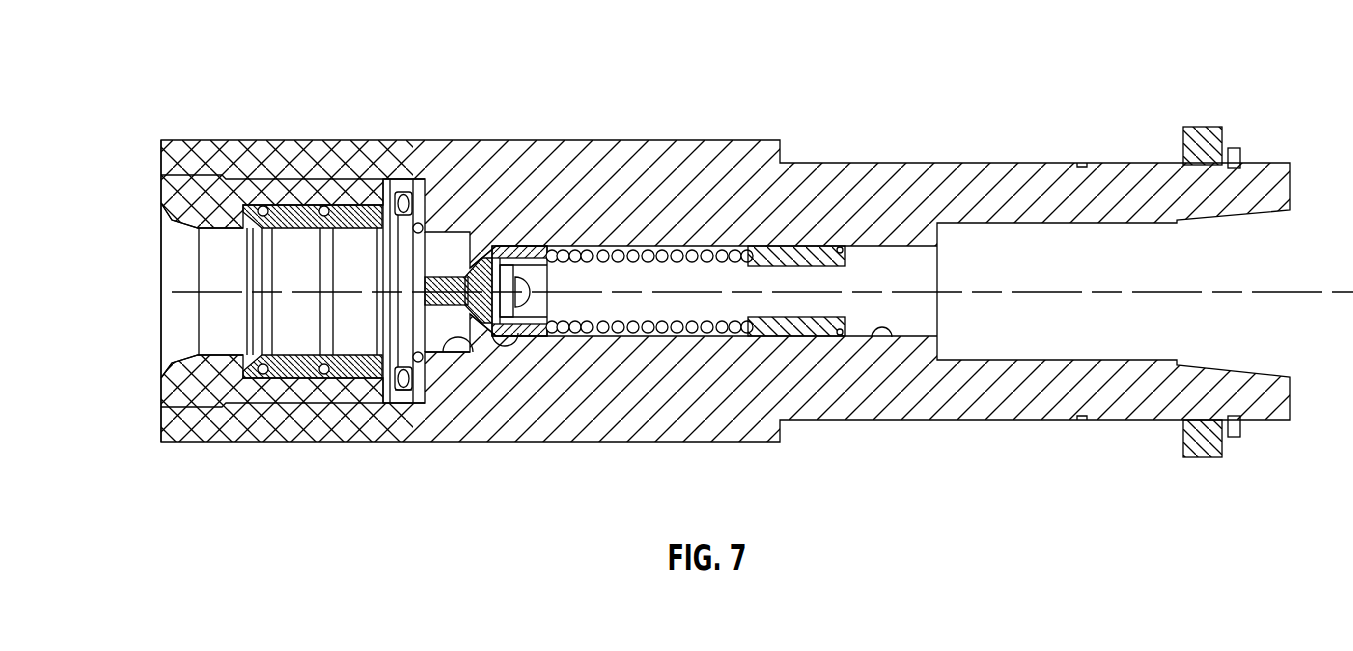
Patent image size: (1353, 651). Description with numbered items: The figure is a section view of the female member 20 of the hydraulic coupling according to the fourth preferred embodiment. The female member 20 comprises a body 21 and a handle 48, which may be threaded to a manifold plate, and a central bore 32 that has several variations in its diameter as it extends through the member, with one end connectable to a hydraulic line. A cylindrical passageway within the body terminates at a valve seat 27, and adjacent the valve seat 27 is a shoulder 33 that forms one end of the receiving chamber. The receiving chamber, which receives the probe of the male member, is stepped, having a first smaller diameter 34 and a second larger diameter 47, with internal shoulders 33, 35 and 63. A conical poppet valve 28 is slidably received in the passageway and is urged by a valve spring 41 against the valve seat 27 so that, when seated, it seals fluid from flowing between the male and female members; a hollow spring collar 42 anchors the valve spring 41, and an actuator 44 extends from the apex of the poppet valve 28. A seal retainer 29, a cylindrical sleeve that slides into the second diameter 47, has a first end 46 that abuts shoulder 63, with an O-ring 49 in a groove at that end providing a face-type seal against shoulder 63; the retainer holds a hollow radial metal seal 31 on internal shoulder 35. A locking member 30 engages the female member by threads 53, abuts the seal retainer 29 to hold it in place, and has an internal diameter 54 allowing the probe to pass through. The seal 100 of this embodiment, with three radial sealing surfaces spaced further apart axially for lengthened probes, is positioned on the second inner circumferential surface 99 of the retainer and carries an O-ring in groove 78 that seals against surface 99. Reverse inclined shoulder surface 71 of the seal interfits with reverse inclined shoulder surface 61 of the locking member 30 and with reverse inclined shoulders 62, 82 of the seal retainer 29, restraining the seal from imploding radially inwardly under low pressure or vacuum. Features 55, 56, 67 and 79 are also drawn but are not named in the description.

The female member 20 is at (600, 114).
The body 21 is at (725, 270).
The valve seat 27 is at (563, 357).
The poppet valve 28 is at (524, 224).
The seal retainer 29 is at (403, 372).
The locking member 30 is at (126, 291).
The hollow radial metal seal 31 is at (463, 145).
The central bore 32 is at (926, 387).
The shoulder 33 is at (541, 375).
The receiving chamber first smaller diameter 34 is at (509, 424).
The internal shoulder 35 is at (496, 443).
The valve spring 41 is at (689, 220).
The hollow spring collar 42 is at (841, 223).
The actuator 44 is at (484, 207).
The first end of seal retainer 46 is at (446, 462).
The receiving chamber second larger diameter 47 is at (385, 214).
The handle 48 is at (1181, 267).
The O-ring 49 is at (456, 429).
The threads 53 is at (272, 443).
The internal diameter of locking member 54 is at (167, 345).
The piston flange 55 is at (226, 290).
The piston groove 56 is at (222, 291).
The reverse inclined shoulder surface 61 is at (162, 181).
The reverse inclined shoulder surface 62 is at (309, 157).
The shoulder 63 is at (443, 216).
The piston inner sleeve 67 is at (181, 291).
The reverse inclined shoulder surface 71 is at (246, 138).
The groove 78 is at (188, 208).
The backup ring 79 is at (413, 242).
The reverse inclined shoulder 82 is at (349, 223).
The second inner circumferential surface 99 is at (246, 208).
The seal 100 is at (312, 426).